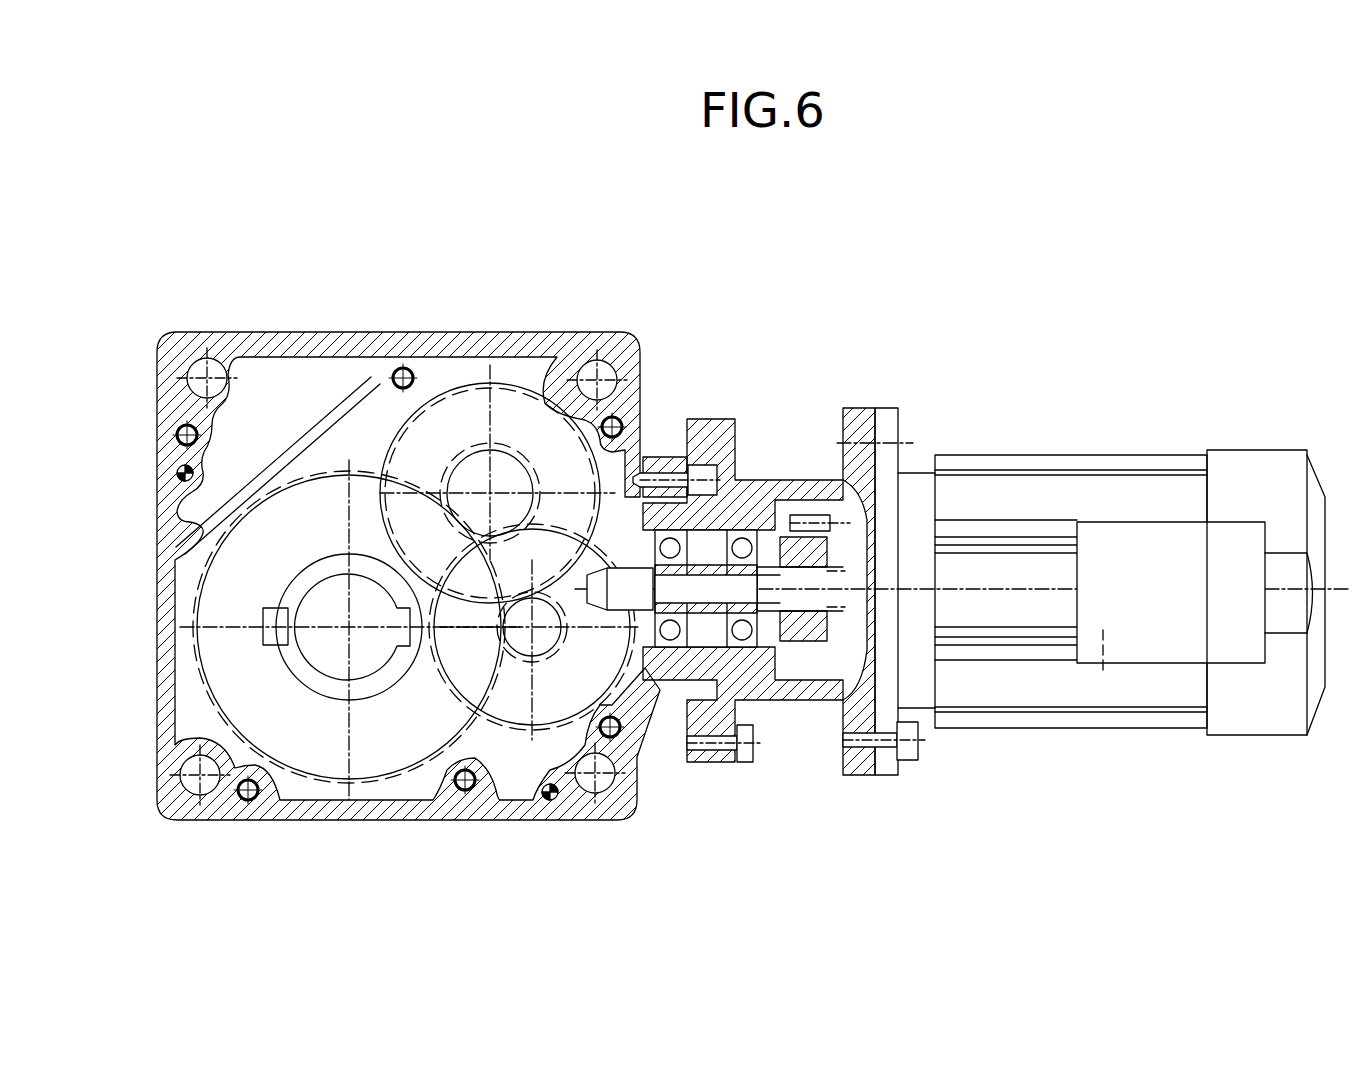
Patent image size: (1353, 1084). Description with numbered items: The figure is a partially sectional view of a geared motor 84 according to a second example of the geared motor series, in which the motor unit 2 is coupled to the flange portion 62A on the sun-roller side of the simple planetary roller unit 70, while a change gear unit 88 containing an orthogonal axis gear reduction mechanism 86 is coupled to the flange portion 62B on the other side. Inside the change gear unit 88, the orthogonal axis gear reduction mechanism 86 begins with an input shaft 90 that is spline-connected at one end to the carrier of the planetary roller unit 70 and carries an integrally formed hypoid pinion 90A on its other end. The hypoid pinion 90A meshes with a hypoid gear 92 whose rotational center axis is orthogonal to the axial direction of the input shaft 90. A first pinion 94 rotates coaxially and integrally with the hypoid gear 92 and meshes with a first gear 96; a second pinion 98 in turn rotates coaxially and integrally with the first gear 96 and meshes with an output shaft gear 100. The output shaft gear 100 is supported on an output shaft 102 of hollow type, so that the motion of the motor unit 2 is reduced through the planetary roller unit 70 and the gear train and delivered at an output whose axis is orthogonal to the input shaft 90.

The motor unit 2 is at (1137, 457).
The flange portion 62A is at (863, 407).
The flange portion 62B is at (728, 418).
The simple planetary roller unit 70 is at (786, 404).
The geared motor 84 is at (1036, 319).
The orthogonal axis gear reduction mechanism 86 is at (513, 742).
The change gear unit 88 is at (517, 204).
The input shaft 90 is at (705, 612).
The hypoid pinion 90A is at (613, 612).
The hypoid gear 92 is at (500, 722).
The first pinion 94 is at (440, 747).
The first gear 96 is at (543, 385).
The second pinion 98 is at (475, 440).
The output shaft gear 100 is at (253, 737).
The output shaft 102 is at (300, 705).